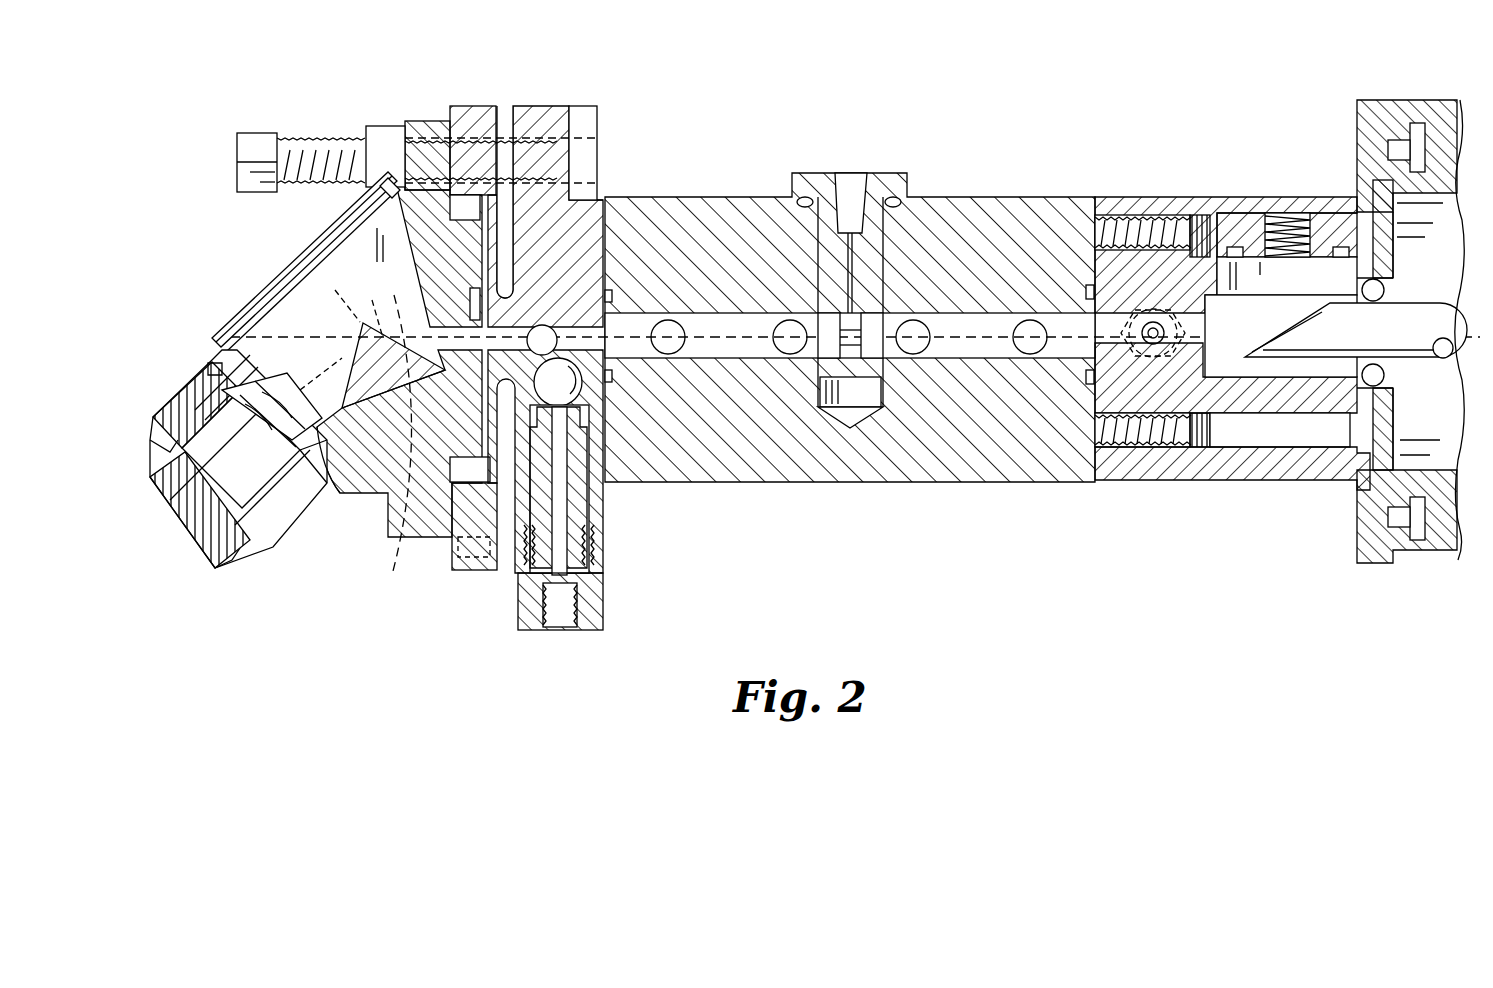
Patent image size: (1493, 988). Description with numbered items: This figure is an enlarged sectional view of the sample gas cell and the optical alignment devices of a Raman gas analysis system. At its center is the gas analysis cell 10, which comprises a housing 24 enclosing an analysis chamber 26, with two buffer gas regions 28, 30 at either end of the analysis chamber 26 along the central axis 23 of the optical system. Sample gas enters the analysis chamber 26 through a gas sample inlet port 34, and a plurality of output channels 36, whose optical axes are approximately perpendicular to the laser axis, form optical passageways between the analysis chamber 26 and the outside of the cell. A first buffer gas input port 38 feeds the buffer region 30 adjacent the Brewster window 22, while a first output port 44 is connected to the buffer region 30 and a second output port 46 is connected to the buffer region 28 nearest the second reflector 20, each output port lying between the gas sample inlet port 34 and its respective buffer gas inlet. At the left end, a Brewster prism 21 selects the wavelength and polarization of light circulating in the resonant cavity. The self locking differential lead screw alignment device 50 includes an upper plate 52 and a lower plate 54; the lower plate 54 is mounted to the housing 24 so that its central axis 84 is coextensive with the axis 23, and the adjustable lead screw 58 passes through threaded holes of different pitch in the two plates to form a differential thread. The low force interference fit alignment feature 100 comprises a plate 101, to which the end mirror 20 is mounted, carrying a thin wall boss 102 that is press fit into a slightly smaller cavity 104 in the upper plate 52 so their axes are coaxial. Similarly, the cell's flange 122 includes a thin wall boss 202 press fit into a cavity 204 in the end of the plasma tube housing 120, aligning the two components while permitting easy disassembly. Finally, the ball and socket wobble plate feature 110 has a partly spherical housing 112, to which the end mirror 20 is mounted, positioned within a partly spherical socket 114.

The gas analysis cell 10 is at (958, 152).
The second reflector 20 is at (297, 403).
The Brewster prism 21 is at (363, 323).
The Brewster window 22 is at (1237, 330).
The central axis of the optical system 23 is at (638, 325).
The housing 24 is at (705, 197).
The analysis chamber 26 is at (1185, 359).
The buffer gas region 28 is at (400, 300).
The buffer gas region 30 is at (1250, 325).
The gas sample inlet port 34 is at (858, 175).
The output channels 36 is at (672, 352).
The first buffer gas input port 38 is at (1283, 215).
The first output port 44 is at (1153, 340).
The second output port 46 is at (545, 346).
The alignment device 50 is at (503, 98).
The upper plate 52 is at (472, 106).
The lower plate 54 is at (530, 106).
The lead screw 58 is at (258, 135).
The central axis of the lower plate 84 is at (391, 445).
The low force interference fit mechanical interface optical alignment feature 100 is at (432, 632).
The plate 101 is at (437, 505).
The thin wall boss 102 is at (463, 190).
The cavity 104 is at (468, 470).
The ball and socket wobble plate feature 110 is at (206, 330).
The housing 112 is at (258, 392).
The socket 114 is at (335, 490).
The plasma tube housing 120 is at (1432, 555).
The flange 122 is at (1392, 553).
The thin wall boss 202 is at (1398, 500).
The cavity 204 is at (1418, 145).